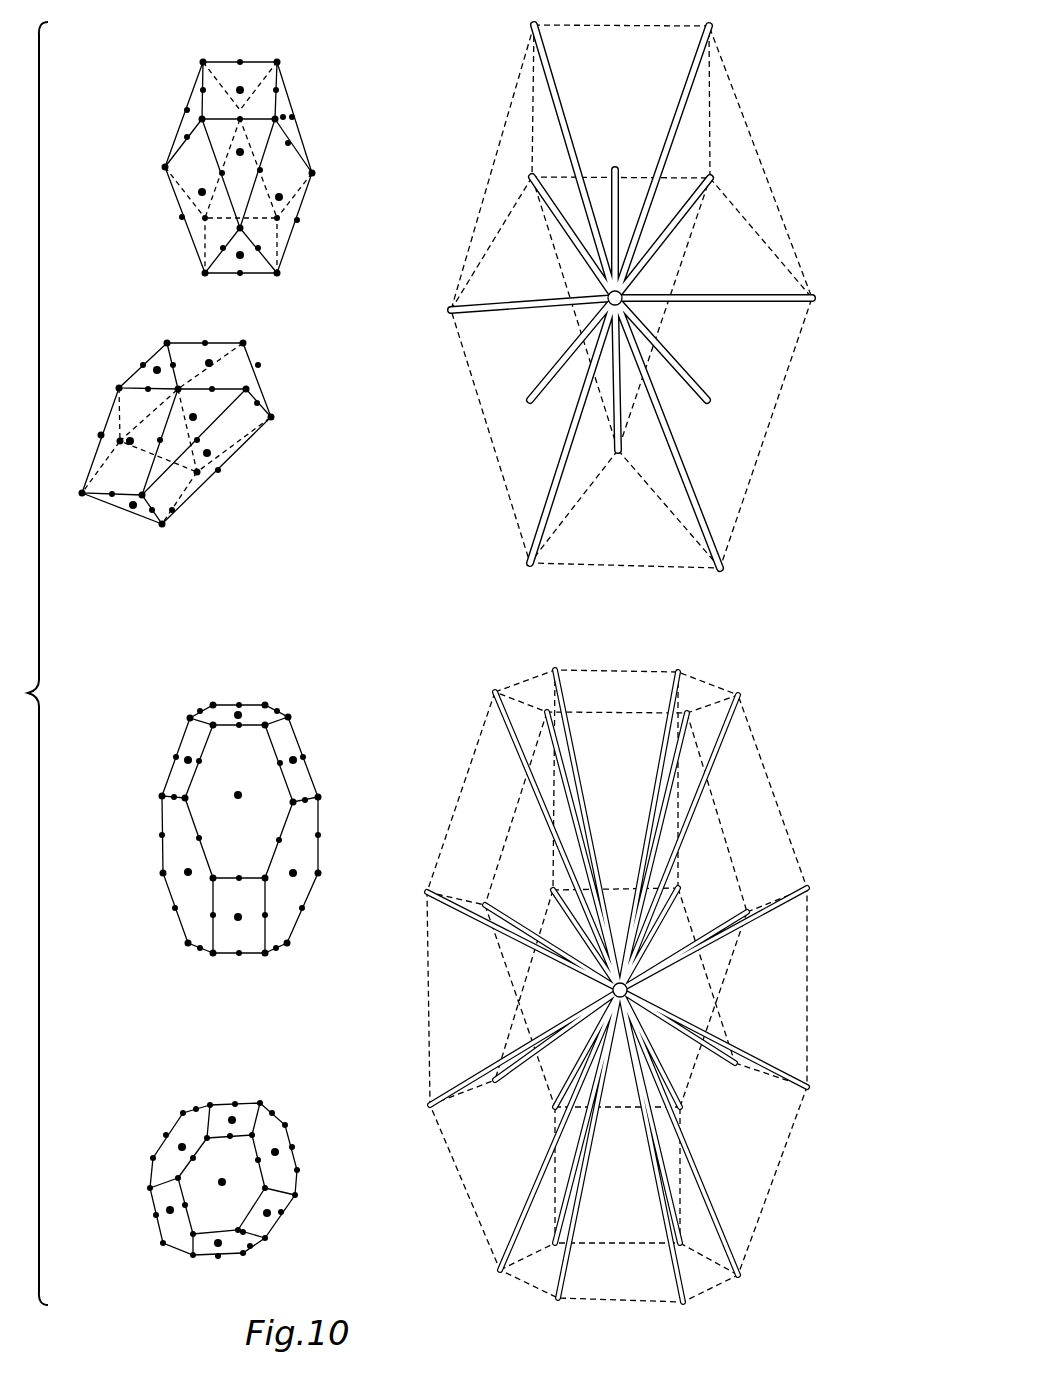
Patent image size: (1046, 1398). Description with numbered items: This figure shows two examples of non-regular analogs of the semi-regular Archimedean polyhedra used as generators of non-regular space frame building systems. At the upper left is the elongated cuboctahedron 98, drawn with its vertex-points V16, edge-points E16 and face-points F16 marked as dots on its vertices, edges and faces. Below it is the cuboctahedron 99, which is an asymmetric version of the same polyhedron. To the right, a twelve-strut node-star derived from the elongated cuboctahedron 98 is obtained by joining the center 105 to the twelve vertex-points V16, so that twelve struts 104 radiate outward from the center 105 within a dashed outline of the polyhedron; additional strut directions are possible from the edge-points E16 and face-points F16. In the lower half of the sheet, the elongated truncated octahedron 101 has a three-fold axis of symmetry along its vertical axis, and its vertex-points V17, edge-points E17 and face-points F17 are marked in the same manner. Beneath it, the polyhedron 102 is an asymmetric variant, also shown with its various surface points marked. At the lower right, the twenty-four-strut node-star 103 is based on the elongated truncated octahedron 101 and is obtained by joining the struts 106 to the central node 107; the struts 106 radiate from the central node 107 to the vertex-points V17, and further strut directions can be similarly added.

The elongated cuboctahedron 98 is at (158, 265).
The asymmetric cuboctahedron 99 is at (118, 530).
The elongated truncated octahedron 101 is at (153, 962).
The asymmetric variant of the truncated octahedron 102 is at (148, 1262).
The node-star 103 is at (617, 1009).
The struts 104 is at (678, 212).
The center 105 is at (625, 292).
The struts 106 is at (701, 824).
The central node 107 is at (630, 990).
The vertex-points V16 is at (279, 58).
The edge-points E16 is at (292, 115).
The face-points F16 is at (288, 198).
The vertex-points V17 is at (190, 715).
The edge-points E17 is at (238, 702).
The face-points F17 is at (239, 802).